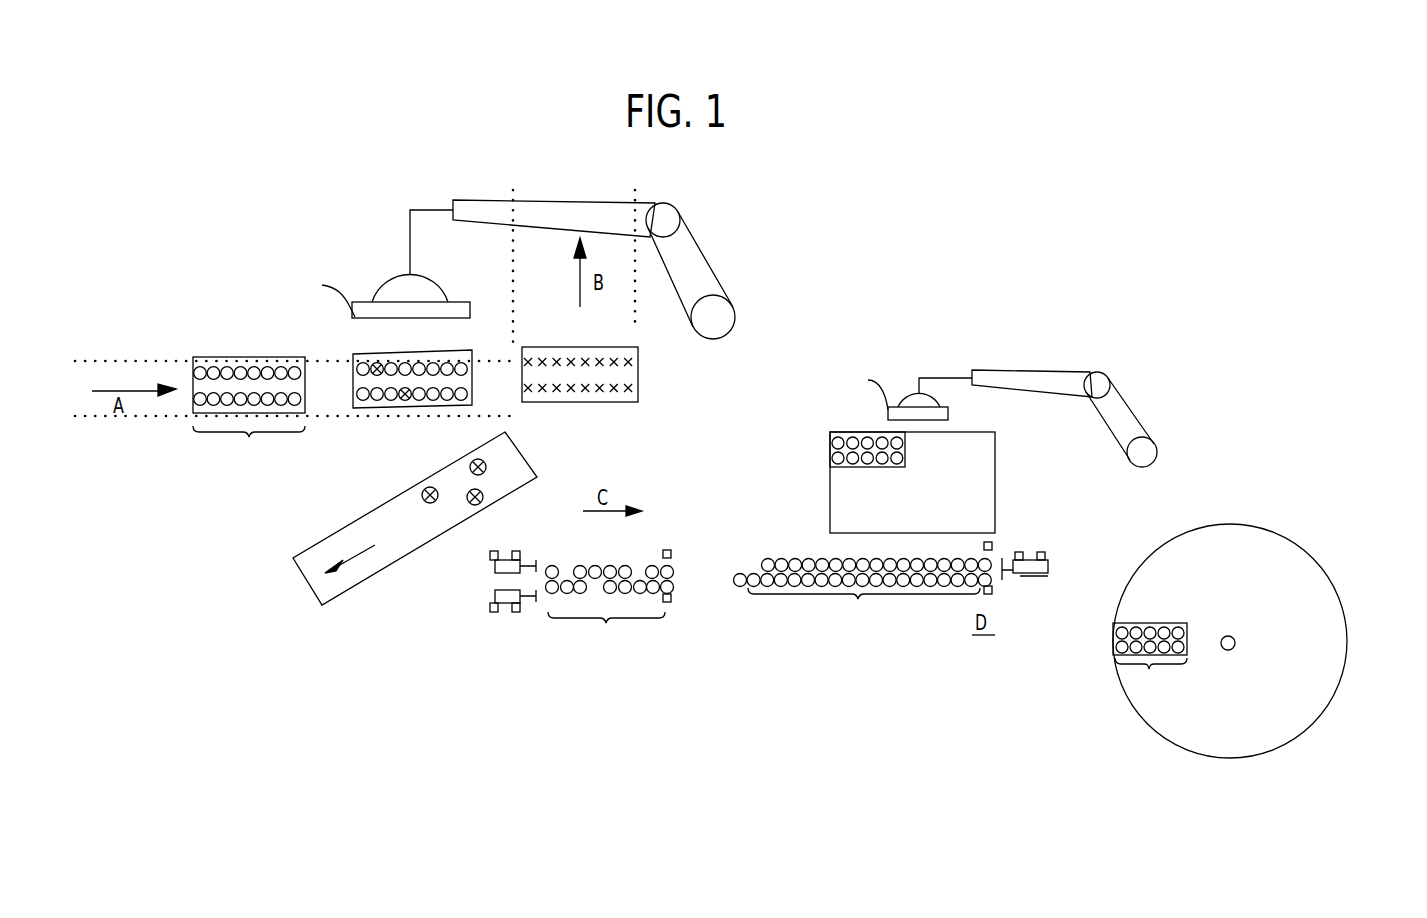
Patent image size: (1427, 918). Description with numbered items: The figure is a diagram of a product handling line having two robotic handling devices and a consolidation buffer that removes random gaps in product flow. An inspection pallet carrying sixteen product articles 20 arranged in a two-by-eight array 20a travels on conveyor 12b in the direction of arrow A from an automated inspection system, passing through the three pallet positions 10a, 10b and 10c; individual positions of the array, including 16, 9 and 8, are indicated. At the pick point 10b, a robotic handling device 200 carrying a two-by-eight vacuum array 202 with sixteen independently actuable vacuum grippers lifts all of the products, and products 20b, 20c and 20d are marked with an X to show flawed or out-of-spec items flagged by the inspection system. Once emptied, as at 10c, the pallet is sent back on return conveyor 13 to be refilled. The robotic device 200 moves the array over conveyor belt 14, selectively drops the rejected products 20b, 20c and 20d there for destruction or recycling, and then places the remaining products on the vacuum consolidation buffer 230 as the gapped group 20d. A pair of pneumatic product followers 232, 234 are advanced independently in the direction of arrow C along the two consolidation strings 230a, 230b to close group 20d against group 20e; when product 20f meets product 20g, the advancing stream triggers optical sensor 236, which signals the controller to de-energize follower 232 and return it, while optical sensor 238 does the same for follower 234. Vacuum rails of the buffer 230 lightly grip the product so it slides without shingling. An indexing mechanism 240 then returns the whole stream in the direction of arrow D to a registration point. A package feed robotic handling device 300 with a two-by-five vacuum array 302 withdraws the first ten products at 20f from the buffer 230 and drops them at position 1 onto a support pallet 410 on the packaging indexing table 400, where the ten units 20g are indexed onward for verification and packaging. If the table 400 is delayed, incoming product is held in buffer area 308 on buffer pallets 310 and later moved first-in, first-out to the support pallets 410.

The conveyor 12b is at (128, 360).
The inspection pallet position 10a is at (213, 357).
The product articles 20 is at (255, 364).
The 2×8 array 20a is at (249, 449).
The inspection carrier at pick point 10b is at (433, 378).
The tray position 16 is at (366, 349).
The tray position 9 is at (461, 349).
The tray position 8 is at (363, 410).
The position 1 is at (472, 369).
The flawed product 20b is at (383, 352).
The flawed product 20c is at (433, 367).
The product group 20d is at (406, 401).
The 2×8 vacuum array 202 is at (462, 300).
The robotic handling device 200 is at (700, 260).
The return conveyor 13 is at (636, 310).
The empty inspection pallet position 10c is at (590, 402).
The conveyor belt 14 is at (360, 568).
The pneumatic product follower 232 is at (485, 567).
The pneumatic product follower 234 is at (488, 607).
The product group 20f is at (670, 567).
The vacuum consolidation buffer 230 is at (900, 572).
The consolidation string 230a is at (703, 585).
The consolidation string 230b is at (723, 565).
The product group 20e is at (864, 611).
The product units 20g is at (768, 561).
The optical sensor 236 is at (992, 545).
The optical sensor 238 is at (994, 595).
The indexing mechanism 240 is at (1050, 560).
The buffer area 308 is at (911, 475).
The buffer pallets 310 is at (830, 445).
The 2×5 vacuum array 302 is at (950, 413).
The package feed robotic handling device 300 is at (1120, 418).
The packaging indexing table 400 is at (1228, 647).
The support pallet 410 is at (1188, 643).